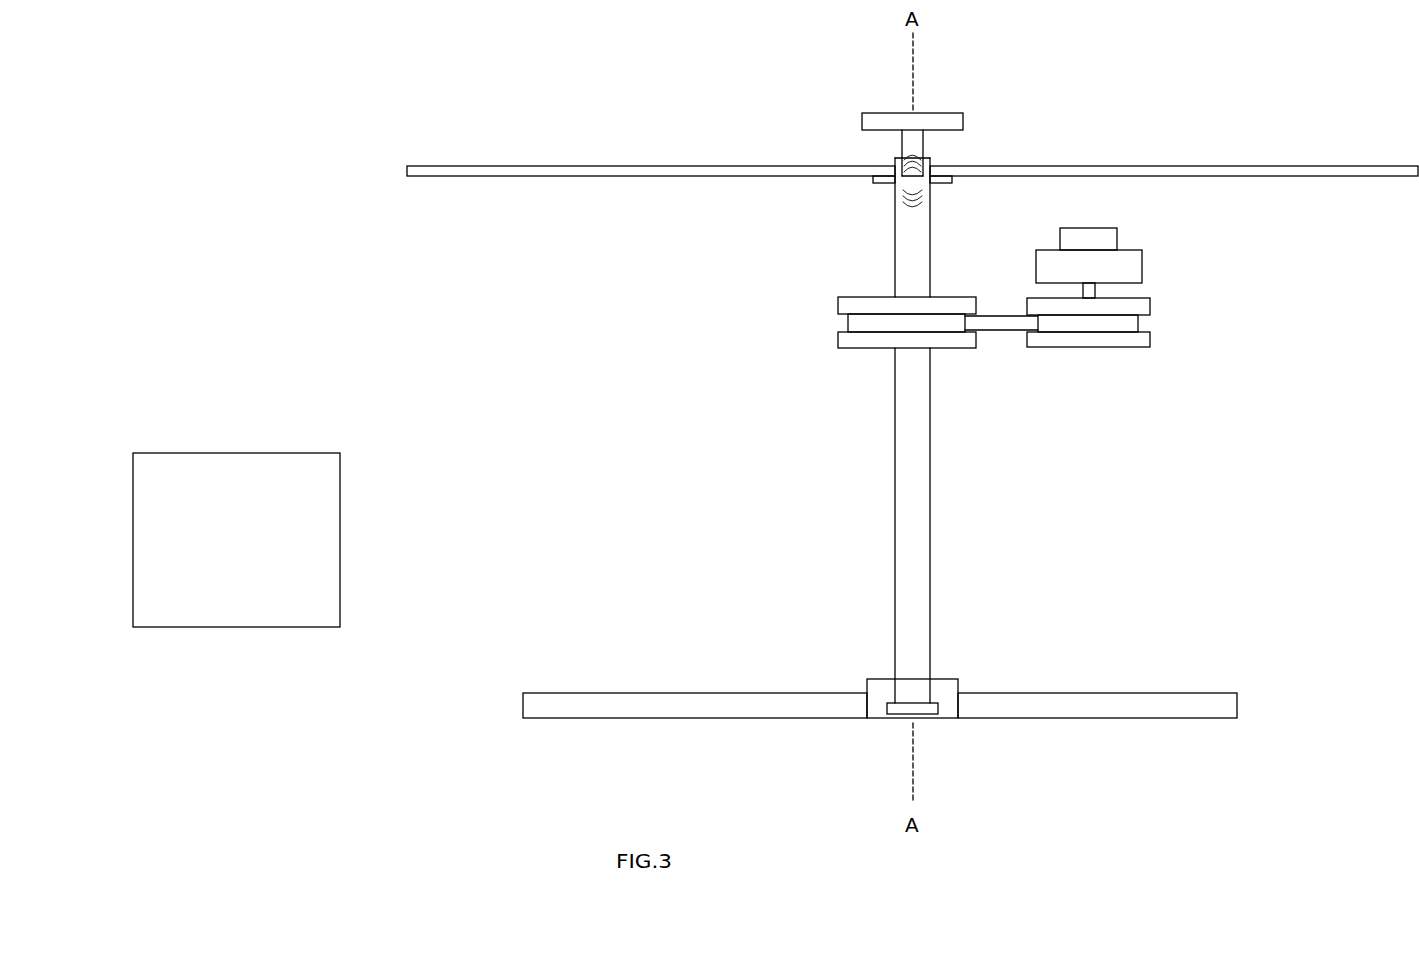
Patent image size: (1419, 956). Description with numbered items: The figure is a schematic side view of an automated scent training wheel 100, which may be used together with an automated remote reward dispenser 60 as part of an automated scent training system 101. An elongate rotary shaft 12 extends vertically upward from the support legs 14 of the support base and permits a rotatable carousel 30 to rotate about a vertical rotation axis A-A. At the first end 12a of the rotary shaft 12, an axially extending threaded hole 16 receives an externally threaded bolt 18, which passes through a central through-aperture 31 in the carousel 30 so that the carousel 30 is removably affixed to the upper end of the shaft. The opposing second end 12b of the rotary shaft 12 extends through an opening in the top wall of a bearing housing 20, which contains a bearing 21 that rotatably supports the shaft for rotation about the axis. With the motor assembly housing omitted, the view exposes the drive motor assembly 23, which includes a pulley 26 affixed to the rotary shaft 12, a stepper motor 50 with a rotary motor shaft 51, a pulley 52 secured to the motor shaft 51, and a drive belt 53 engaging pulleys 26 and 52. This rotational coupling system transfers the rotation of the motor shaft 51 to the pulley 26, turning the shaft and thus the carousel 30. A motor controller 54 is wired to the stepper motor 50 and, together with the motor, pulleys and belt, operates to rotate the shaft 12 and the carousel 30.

The automated scent training system 101 is at (262, 132).
The automated scent training wheel 100 is at (1355, 268).
The drive motor assembly 23 is at (1237, 277).
The rotatable carousel 30 is at (1217, 166).
The externally threaded bolt 18 is at (940, 113).
The central through-aperture 31 is at (896, 168).
The threaded hole 16 is at (880, 210).
The first end of rotary shaft 12a is at (948, 190).
The rotary shaft 12 is at (931, 287).
The pulley 26 is at (838, 340).
The drive belt 53 is at (1000, 332).
The pulley 52 is at (1112, 347).
The rotary motor shaft 51 is at (1095, 292).
The stepper motor 50 is at (1142, 270).
The motor controller 54 is at (1117, 240).
The automated remote reward dispenser 60 is at (340, 505).
The support legs 14 is at (642, 692).
The bearing housing 20 is at (945, 679).
The bearing 21 is at (920, 716).
The second end of rotary shaft 12b is at (877, 668).